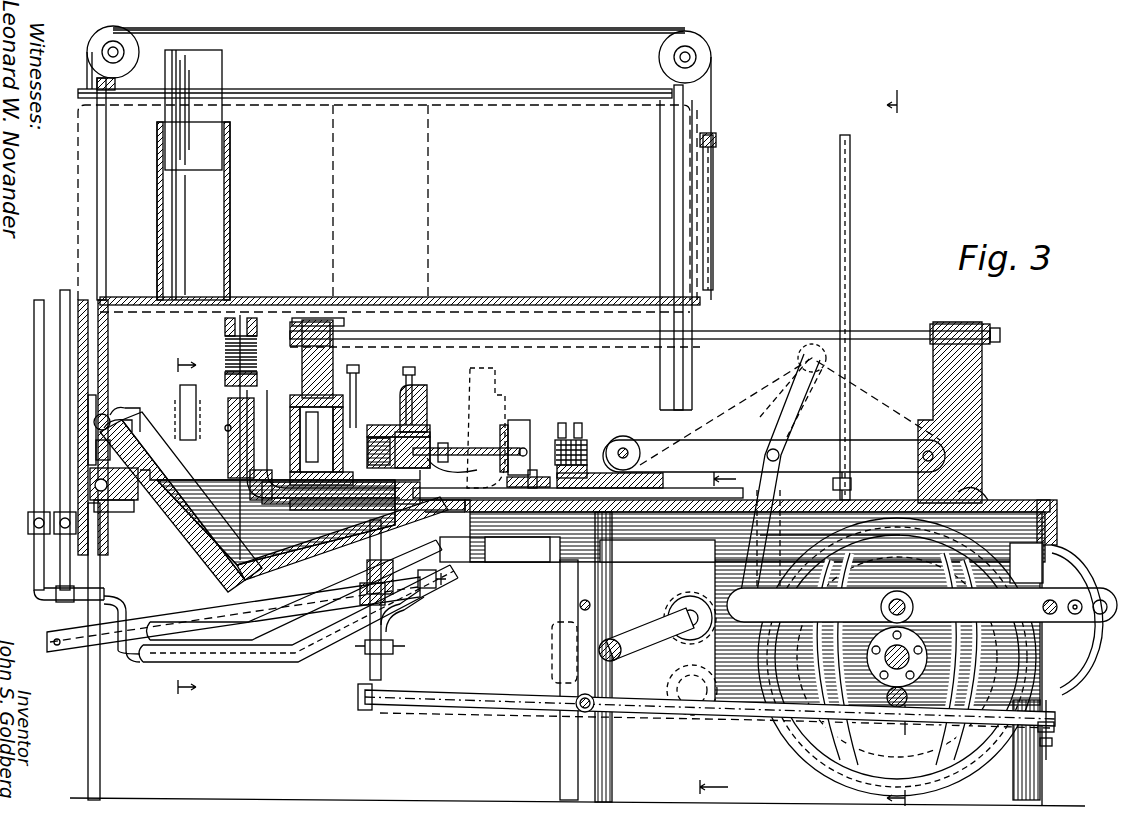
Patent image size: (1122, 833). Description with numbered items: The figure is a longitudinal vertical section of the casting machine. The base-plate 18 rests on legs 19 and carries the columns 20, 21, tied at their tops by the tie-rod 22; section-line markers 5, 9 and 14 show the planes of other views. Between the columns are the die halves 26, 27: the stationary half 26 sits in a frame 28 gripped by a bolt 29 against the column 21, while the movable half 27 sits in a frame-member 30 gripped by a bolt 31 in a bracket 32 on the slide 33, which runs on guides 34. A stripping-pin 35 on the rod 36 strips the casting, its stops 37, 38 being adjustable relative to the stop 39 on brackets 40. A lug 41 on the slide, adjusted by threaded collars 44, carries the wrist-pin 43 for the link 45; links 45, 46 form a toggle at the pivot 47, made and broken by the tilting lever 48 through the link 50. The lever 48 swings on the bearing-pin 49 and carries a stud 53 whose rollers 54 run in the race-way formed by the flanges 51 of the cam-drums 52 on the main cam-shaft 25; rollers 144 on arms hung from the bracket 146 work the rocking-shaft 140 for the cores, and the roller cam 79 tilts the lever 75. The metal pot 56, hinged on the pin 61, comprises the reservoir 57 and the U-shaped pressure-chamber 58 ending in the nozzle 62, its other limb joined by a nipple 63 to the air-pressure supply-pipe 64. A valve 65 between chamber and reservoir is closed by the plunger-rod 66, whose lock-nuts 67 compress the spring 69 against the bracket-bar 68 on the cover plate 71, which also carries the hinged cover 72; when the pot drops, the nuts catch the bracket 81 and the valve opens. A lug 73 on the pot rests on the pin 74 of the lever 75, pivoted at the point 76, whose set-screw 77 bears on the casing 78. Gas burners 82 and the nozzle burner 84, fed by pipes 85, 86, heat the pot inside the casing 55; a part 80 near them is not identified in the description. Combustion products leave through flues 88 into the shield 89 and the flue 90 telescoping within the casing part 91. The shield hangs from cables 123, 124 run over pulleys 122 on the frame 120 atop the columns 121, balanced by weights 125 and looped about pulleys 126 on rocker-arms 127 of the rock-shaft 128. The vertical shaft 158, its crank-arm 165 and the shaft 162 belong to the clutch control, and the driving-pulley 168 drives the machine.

The pulley 122 is at (95, 40).
The wire cable 123 is at (325, 36).
The rectangular open frame 120 is at (440, 89).
The rods or columns 121 is at (100, 168).
The wire cable 124 is at (660, 225).
The counterbalance weights 125 is at (714, 208).
The vertical shaft 158 is at (850, 186).
The section line 5 is at (904, 445).
The section line 9 is at (723, 634).
The section line 14 is at (170, 525).
The flue 90 is at (222, 118).
The co-acting casing part 91 is at (229, 222).
The protecting shield 89 is at (462, 298).
The tie-rod 22 is at (518, 340).
The column 21 is at (336, 362).
The bolt 29 is at (359, 369).
The bolt 31 is at (412, 381).
The bracket 32 is at (428, 398).
The frame-member 30 is at (432, 424).
The die half 27 is at (392, 428).
The die half 26 is at (393, 417).
The frame 28 is at (317, 439).
The bracket 81 is at (268, 438).
The cover plate 71 is at (262, 458).
The plunger-rod 66 is at (232, 412).
The bracket-bar 68 is at (225, 322).
The spring 69 is at (257, 340).
The lock-nuts 67 is at (257, 380).
The cover 72 is at (225, 432).
The flues 88 is at (180, 400).
The nipple 63 is at (140, 436).
The air-pressure supply-pipe 64 is at (98, 450).
The reservoir 57 is at (230, 500).
The valve 65 is at (250, 562).
The pouring or pressure-chamber 58 is at (178, 544).
The metal pot 56 is at (182, 524).
The pin 61 is at (110, 512).
The protecting casing 55 is at (185, 590).
The gas burner 82 is at (300, 615).
The lug 73 is at (393, 604).
The pin 74 is at (400, 616).
The valve 80 is at (394, 656).
The pipe 85 is at (34, 388).
The pipe 86 is at (60, 420).
The nozzle 62 is at (418, 508).
The burner 84 is at (420, 516).
The stop 37 is at (443, 443).
The rod 36 is at (474, 448).
The stripping-pin 35 is at (450, 462).
The stop 38 is at (524, 448).
The bracket 39 is at (504, 425).
The brackets 40 is at (525, 422).
The threaded collars 44 is at (578, 438).
The lug 41 is at (584, 428).
The wrist-pin 43 is at (628, 448).
The slide 33 is at (648, 473).
The guides 34 is at (700, 492).
The link 45 is at (752, 440).
The link 46 is at (830, 440).
The pivot 47 is at (798, 420).
The link 50 is at (773, 462).
The crank-arm 165 is at (851, 484).
The column 20 is at (982, 388).
The driving-pulley 168 is at (985, 494).
The base-plate 18 is at (1032, 502).
The rocking-shaft 140 is at (494, 562).
The bracket 146 is at (790, 535).
The legs 19 is at (100, 730).
The shaft 162 is at (590, 606).
The pulleys 126 is at (688, 596).
The rocker-arms 127 is at (655, 630).
The rock-shaft 128 is at (598, 650).
The rollers 144 is at (718, 690).
The cam-drums 52 is at (805, 728).
The flanges 51 is at (910, 730).
The tilting lever 48 is at (922, 605).
The bearing-pin 49 is at (1052, 600).
The rollers 54 is at (914, 606).
The stud 53 is at (889, 606).
The main cam-shaft 25 is at (928, 656).
The roller cam 79 is at (907, 697).
The lever 75 is at (468, 690).
The pivot point 76 is at (590, 712).
The adjustable set-screw 77 is at (1055, 726).
The casing 78 is at (1082, 676).